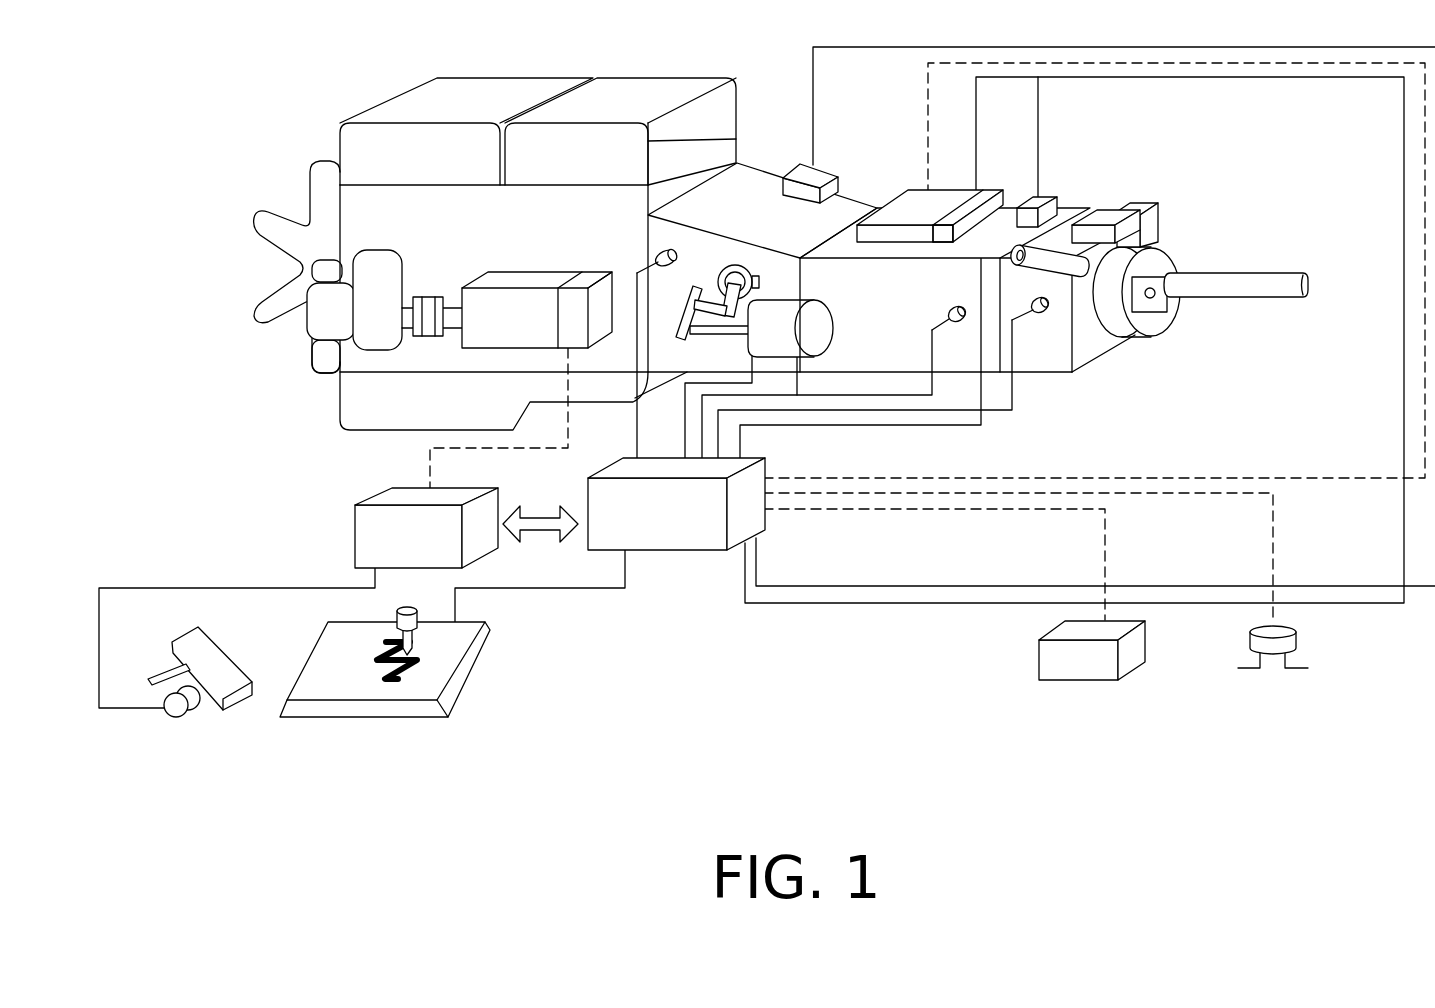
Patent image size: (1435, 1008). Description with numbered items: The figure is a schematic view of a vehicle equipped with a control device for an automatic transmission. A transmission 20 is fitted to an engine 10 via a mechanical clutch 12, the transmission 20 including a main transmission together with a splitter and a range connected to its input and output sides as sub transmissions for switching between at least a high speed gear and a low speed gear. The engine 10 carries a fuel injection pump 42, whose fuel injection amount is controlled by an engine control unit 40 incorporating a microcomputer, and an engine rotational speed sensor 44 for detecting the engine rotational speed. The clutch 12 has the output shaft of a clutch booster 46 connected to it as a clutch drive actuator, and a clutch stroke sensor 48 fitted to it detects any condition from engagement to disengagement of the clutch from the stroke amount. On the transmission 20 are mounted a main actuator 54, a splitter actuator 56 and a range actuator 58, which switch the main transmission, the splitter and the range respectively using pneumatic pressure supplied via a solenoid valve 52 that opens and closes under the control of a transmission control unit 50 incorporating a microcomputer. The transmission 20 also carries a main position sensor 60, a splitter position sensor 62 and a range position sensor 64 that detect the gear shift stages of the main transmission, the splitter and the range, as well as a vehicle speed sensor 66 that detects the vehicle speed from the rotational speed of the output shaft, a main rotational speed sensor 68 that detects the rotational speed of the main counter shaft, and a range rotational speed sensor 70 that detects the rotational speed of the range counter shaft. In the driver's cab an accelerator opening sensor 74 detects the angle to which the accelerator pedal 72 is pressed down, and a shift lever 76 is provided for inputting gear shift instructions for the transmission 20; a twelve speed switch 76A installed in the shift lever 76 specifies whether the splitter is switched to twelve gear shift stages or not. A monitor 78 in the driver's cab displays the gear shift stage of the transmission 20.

The engine 10 is at (437, 93).
The clutch 12 is at (752, 188).
The transmission 20 is at (1133, 368).
The engine control unit 40 is at (355, 515).
The fuel injection pump 42 is at (505, 280).
The engine rotational speed sensor 44 is at (655, 259).
The clutch booster 46 is at (822, 332).
The clutch stroke sensor 48 is at (722, 272).
The transmission control unit 50 is at (757, 520).
The solenoid valve 52 is at (1297, 639).
The main actuator 54 is at (947, 203).
The splitter actuator 56 is at (1114, 222).
The range actuator 58 is at (1130, 207).
The main position sensor 60 is at (997, 195).
The splitter position sensor 62 is at (822, 177).
The range position sensor 64 is at (1055, 203).
The vehicle speed sensor 66 is at (1058, 262).
The main rotational speed sensor 68 is at (958, 321).
The range rotational speed sensor 70 is at (1045, 312).
The accelerator pedal 72 is at (187, 638).
The accelerator opening sensor 74 is at (162, 703).
The shift lever 76 is at (465, 668).
The twelve speed switch 76A is at (408, 607).
The monitor 78 is at (1135, 638).